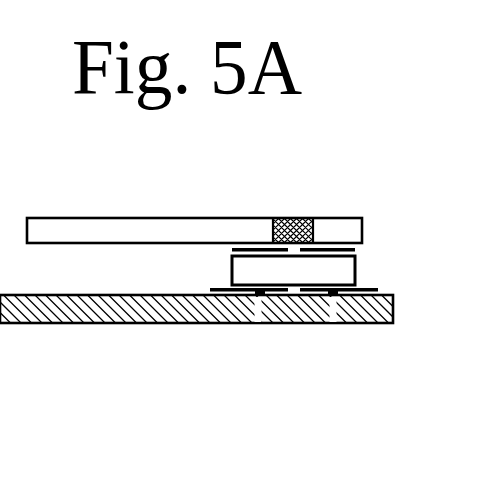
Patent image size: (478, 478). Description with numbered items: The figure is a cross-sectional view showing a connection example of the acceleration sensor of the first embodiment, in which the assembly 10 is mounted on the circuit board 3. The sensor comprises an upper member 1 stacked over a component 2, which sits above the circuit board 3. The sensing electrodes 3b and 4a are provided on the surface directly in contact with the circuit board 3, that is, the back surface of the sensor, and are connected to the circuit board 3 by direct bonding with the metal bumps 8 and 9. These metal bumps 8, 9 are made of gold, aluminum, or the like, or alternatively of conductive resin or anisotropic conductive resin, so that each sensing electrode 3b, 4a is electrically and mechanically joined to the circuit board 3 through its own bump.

The upper plate / cover substrate 1 is at (158, 222).
The electronic component (chip) 2 is at (262, 256).
The circuit board 3 is at (130, 314).
The sensing electrode 3b is at (216, 289).
The sensing electrode 4a is at (370, 289).
The metal bump 8 is at (258, 296).
The metal bump 9 is at (333, 296).
The mounting assembly 10 is at (337, 209).